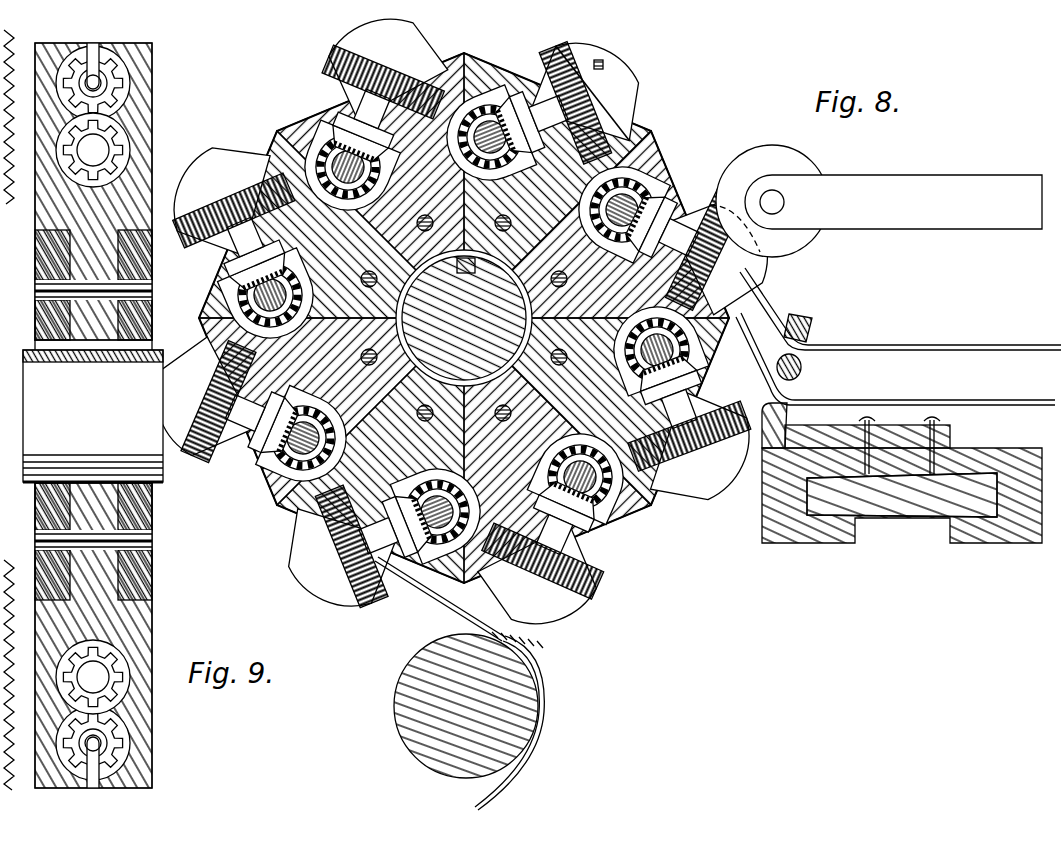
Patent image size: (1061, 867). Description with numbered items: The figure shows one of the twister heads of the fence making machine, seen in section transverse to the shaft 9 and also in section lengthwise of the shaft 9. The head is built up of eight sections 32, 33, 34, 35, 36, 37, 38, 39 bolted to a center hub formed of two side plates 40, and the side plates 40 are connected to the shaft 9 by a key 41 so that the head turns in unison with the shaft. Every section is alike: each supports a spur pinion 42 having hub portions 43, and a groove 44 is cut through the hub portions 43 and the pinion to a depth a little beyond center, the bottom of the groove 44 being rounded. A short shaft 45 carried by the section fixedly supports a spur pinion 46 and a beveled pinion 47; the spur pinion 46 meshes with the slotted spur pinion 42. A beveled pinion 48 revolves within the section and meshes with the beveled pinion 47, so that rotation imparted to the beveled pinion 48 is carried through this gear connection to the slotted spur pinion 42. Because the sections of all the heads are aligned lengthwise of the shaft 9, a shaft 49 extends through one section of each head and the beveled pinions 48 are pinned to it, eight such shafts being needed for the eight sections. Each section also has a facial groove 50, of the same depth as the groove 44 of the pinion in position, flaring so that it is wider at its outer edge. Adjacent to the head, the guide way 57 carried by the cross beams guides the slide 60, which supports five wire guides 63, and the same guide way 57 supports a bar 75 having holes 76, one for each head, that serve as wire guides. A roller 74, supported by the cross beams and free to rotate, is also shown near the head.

In FIG. 8, the shaft 9 is at (464, 318).
In FIG. 9, the shaft 9 is at (93, 416).
In FIG. 8, the section 32 is at (370, 115).
In FIG. 8, the section 33 is at (584, 97).
In FIG. 8, the section 34 is at (674, 234).
In FIG. 9, the section 34 is at (126, 84).
In FIG. 8, the section 35 is at (677, 404).
In FIG. 8, the section 36 is at (556, 529).
In FIG. 8, the section 37 is at (383, 533).
In FIG. 8, the section 38 is at (250, 415).
In FIG. 9, the section 38 is at (105, 415).
In FIG. 8, the section 39 is at (247, 242).
In FIG. 9, the side plates 40 is at (93, 415).
In FIG. 8, the key 41 is at (465, 276).
In FIG. 8, the spur pinion 42 is at (600, 92).
In FIG. 9, the spur pinion 42 is at (112, 97).
In FIG. 8, the hub portions 43 is at (595, 116).
In FIG. 9, the hub portions 43 is at (128, 92).
In FIG. 9, the groove 44 is at (99, 86).
In FIG. 8, the short shaft 45 is at (562, 130).
In FIG. 9, the short shaft 45 is at (93, 413).
In FIG. 8, the spur pinion 46 is at (545, 162).
In FIG. 9, the spur pinion 46 is at (124, 150).
In FIG. 8, the beveled pinion 47 is at (519, 126).
In FIG. 8, the beveled pinion 48 is at (490, 120).
In FIG. 8, the shaft 49 is at (505, 106).
In FIG. 8, the facial groove 50 is at (603, 68).
In FIG. 9, the facial groove 50 is at (92, 418).
In FIG. 8, the guide way 57 is at (902, 507).
In FIG. 8, the slide 60 is at (902, 495).
In FIG. 8, the wire guides 63 is at (948, 438).
In FIG. 8, the roller 74 is at (446, 706).
In FIG. 8, the bar 75 is at (811, 323).
In FIG. 8, the holes 76 is at (802, 362).